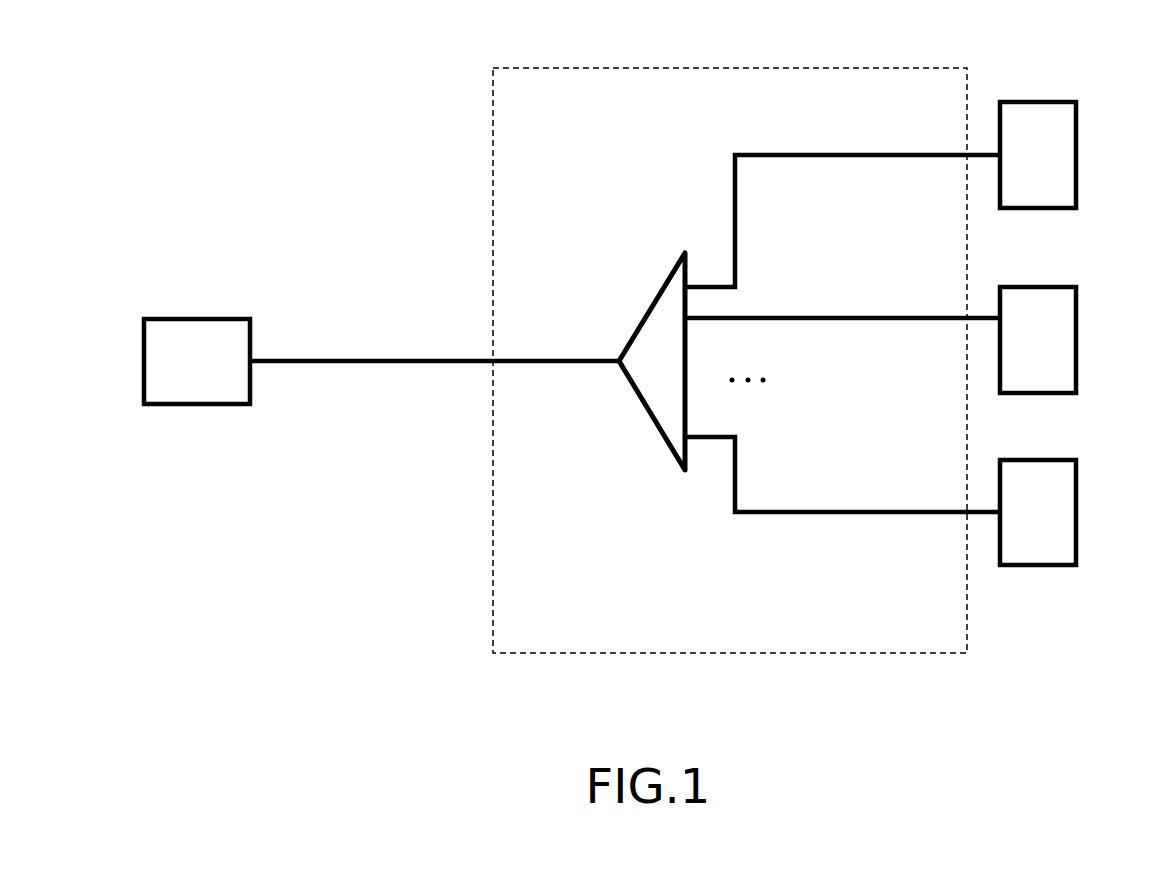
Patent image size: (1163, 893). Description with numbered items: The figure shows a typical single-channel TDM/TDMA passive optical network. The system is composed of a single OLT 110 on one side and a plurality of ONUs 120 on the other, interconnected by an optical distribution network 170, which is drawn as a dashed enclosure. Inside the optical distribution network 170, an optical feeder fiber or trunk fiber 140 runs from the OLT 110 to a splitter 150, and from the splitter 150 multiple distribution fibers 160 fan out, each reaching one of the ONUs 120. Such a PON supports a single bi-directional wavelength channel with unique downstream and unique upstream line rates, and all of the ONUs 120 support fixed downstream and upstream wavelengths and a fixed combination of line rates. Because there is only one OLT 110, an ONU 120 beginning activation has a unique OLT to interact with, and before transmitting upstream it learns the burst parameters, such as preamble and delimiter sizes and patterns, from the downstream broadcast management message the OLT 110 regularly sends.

The OLT 110 is at (185, 317).
The ONU 120 is at (1033, 100).
The optical feeder fiber 140 is at (530, 362).
The splitter 150 is at (663, 283).
The distribution fiber 160 is at (825, 157).
The optical distribution network 170 is at (845, 655).